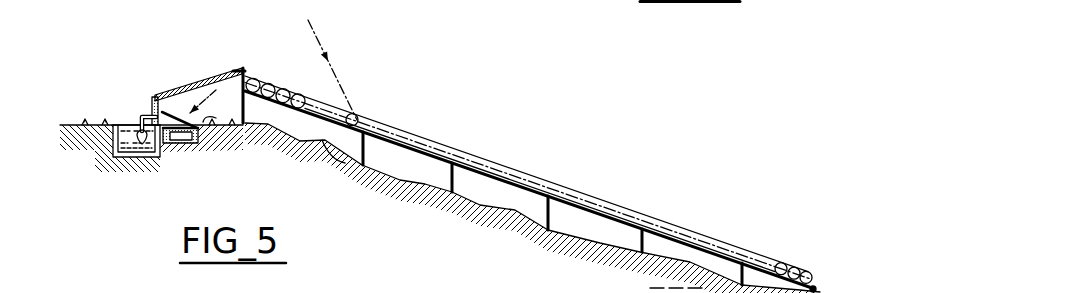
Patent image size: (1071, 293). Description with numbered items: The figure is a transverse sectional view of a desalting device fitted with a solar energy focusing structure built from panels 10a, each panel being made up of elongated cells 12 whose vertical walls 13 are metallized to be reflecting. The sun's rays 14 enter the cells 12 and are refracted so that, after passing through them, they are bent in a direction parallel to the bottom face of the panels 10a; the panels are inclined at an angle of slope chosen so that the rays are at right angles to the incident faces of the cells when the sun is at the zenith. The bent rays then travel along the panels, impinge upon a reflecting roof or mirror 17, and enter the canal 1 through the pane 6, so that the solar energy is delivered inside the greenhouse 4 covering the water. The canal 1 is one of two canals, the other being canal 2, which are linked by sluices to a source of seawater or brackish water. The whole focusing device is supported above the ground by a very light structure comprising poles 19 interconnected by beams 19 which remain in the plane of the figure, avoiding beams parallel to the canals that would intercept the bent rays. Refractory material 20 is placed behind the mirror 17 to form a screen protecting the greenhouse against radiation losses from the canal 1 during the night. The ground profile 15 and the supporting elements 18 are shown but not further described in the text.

The canal 1 is at (175, 147).
The canal 2 is at (108, 147).
The greenhouse 4 is at (188, 142).
The pane 6 is at (203, 122).
The panels 10a is at (452, 145).
The elongated cells 12 is at (362, 112).
The vertical walls 13 is at (782, 287).
The sun's rays 14 is at (332, 67).
The ground foundation 15 is at (320, 143).
The reflecting roof (mirror) 17 is at (222, 75).
The support posts 18 is at (455, 180).
The poles and beams 19 is at (523, 212).
The refractory material 20 is at (394, 290).